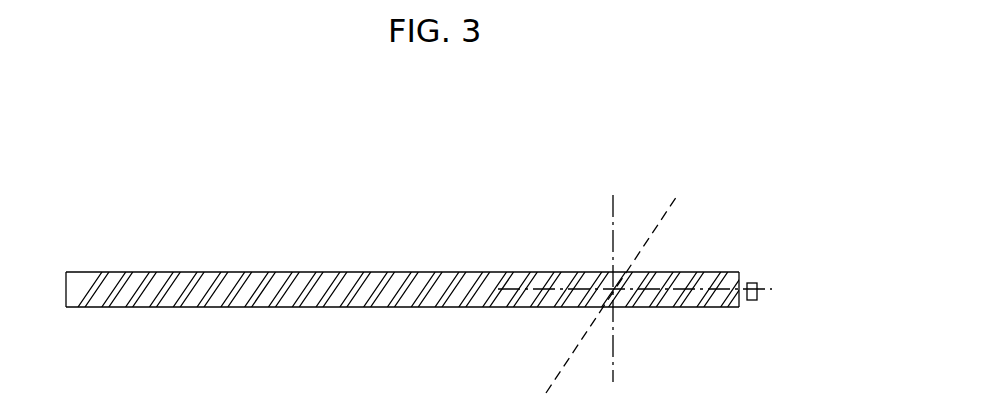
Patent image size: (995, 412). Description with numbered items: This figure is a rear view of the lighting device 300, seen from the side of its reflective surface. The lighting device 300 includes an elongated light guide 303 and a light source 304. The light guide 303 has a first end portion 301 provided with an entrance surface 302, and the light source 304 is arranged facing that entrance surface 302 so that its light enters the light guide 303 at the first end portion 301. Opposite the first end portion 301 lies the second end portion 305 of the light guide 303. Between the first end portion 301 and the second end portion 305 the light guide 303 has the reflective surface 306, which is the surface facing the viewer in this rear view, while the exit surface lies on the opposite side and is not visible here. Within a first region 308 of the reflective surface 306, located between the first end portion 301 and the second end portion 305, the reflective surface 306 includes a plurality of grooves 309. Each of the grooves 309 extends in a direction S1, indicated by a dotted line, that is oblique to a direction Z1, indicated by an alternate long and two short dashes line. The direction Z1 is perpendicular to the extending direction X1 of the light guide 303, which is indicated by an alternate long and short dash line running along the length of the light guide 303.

The lighting device 300 is at (726, 162).
The first end portion 301 is at (737, 276).
The entrance surface 302 is at (743, 275).
The light guide 303 is at (315, 272).
The light source 304 is at (753, 303).
The second end portion 305 is at (78, 272).
The reflective surface 306 is at (533, 283).
The first region 308 is at (542, 308).
The grooves 309 is at (675, 271).
The direction S1 is at (622, 282).
The extending direction X1 is at (651, 289).
The direction Z1 is at (612, 301).